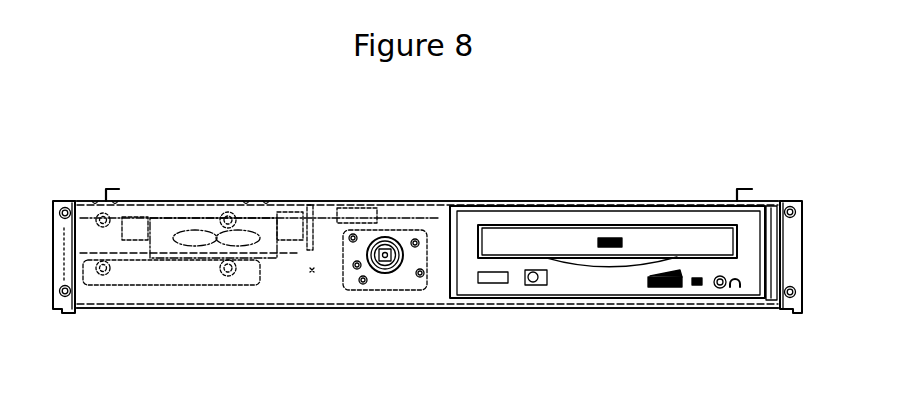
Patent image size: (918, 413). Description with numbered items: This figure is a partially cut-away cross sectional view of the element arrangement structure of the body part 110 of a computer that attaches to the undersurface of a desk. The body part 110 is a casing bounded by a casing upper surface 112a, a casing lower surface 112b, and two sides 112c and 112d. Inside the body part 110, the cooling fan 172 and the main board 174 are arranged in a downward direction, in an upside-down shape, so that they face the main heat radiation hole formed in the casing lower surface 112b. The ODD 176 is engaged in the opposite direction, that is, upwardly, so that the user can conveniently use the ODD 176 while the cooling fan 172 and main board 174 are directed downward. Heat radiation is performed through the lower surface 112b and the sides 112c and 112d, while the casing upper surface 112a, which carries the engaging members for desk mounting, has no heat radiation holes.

The body part 110 is at (543, 187).
The casing upper surface 112a is at (352, 201).
The casing lower surface 112b is at (398, 308).
The side of the casing 112c is at (53, 237).
The side of the casing 112d is at (801, 237).
The cooling fan 172 is at (197, 238).
The main board 174 is at (428, 236).
The ODD 176 is at (643, 238).